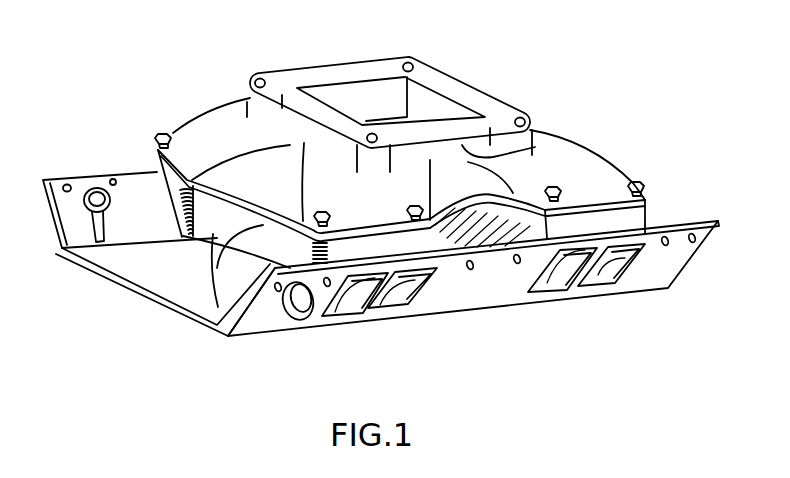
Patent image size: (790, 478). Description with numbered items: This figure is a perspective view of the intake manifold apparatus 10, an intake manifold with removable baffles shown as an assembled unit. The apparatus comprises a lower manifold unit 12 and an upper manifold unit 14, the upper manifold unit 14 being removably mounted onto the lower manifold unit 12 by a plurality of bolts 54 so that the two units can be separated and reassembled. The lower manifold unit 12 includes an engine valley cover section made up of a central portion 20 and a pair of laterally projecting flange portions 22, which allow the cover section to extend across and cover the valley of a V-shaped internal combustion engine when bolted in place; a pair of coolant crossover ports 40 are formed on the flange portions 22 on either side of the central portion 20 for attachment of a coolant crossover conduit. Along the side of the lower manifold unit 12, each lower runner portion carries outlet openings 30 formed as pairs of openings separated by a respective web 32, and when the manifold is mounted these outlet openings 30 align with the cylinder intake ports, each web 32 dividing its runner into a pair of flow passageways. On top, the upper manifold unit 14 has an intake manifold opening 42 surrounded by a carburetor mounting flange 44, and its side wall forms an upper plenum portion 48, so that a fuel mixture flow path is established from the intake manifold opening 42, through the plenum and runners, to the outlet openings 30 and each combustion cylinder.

The intake manifold apparatus 10 is at (520, 78).
The lower manifold unit 12 is at (217, 312).
The upper manifold unit 14 is at (217, 134).
The central portion 20 is at (193, 283).
The flange portions 22 is at (141, 190).
The outlet openings 30 is at (396, 310).
The web 32 is at (348, 277).
The coolant crossover ports 40 is at (120, 175).
The intake manifold opening 42 is at (367, 97).
The carburetor mounting flange 44 is at (345, 78).
The upper plenum portion 48 is at (550, 157).
The bolts 54 is at (636, 182).